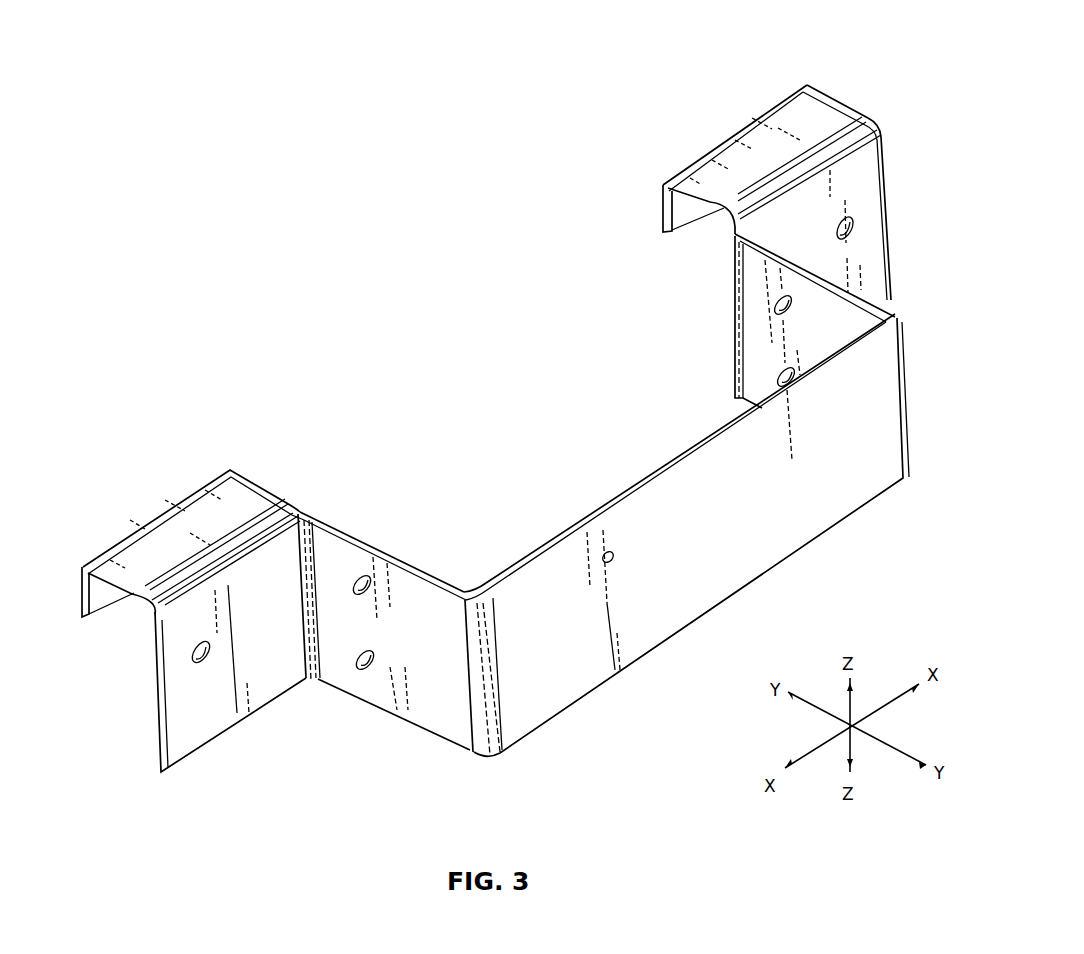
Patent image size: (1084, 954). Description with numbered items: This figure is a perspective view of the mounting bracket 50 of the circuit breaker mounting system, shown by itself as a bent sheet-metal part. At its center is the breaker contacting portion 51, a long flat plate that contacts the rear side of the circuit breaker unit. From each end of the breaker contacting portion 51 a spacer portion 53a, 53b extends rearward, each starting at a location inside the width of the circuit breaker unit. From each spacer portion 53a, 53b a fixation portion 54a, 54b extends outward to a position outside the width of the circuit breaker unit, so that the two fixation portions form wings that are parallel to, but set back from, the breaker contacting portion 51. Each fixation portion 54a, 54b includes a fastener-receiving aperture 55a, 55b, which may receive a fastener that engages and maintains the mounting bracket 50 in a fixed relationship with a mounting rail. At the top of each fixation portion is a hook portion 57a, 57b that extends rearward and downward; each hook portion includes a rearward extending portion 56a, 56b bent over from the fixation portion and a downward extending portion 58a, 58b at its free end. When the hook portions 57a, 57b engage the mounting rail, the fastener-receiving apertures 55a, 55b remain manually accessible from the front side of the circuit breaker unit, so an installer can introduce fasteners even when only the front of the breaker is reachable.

The mounting bracket 50 is at (547, 84).
The breaker contacting portion 51 is at (648, 480).
The spacer portion 53a is at (892, 314).
The spacer portion 53b is at (400, 558).
The fixation portion 54a is at (878, 258).
The fixation portion 54b is at (270, 690).
The fastener-receiving aperture 55a is at (853, 226).
The fastener-receiving aperture 55b is at (212, 662).
The rearward extending portion 56a is at (707, 217).
The rearward extending portion 56b is at (262, 503).
The hook portion 57a is at (752, 122).
The hook portion 57b is at (232, 466).
The downward extending portion 58a is at (664, 213).
The downward extending portion 58b is at (83, 603).